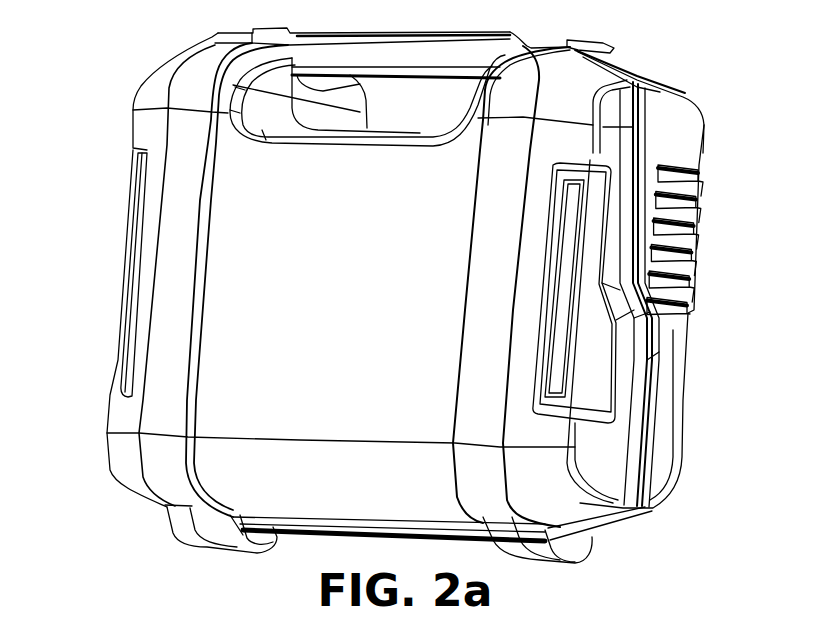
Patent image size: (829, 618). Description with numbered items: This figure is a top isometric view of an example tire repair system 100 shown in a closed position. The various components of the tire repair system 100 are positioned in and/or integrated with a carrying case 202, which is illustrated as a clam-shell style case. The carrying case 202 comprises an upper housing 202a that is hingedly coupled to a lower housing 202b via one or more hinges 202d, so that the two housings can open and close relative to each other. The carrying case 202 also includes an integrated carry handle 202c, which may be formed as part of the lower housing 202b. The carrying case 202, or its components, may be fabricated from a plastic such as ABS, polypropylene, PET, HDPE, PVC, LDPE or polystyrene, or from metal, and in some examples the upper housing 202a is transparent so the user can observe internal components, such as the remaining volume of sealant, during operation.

The tire repair system 100 is at (119, 48).
The carrying case 202 is at (666, 72).
The upper housing 202a is at (107, 399).
The lower housing 202b is at (680, 410).
The integrated carry handle 202c is at (493, 33).
The hinges 202d is at (170, 516).